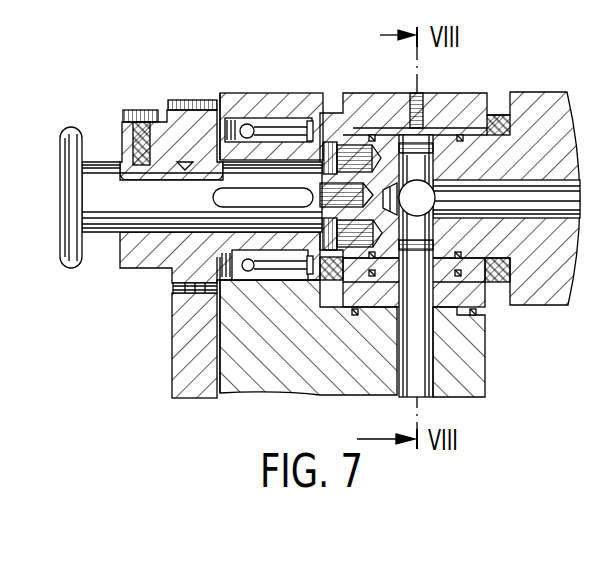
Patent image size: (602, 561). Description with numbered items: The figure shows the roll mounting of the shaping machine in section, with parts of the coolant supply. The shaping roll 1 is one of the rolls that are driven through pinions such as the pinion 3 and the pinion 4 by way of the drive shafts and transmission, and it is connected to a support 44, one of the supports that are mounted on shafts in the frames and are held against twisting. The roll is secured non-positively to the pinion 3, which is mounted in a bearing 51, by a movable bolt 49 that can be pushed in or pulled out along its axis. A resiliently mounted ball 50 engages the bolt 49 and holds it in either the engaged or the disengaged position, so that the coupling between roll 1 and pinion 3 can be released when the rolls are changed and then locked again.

The shaping roll 1 is at (523, 130).
The pinion 3 is at (186, 135).
The pinion 4 is at (185, 332).
The support 44 is at (303, 357).
The movable bolt 49 is at (110, 205).
The resiliently mounted ball 50 is at (133, 165).
The bearing 51 is at (278, 119).